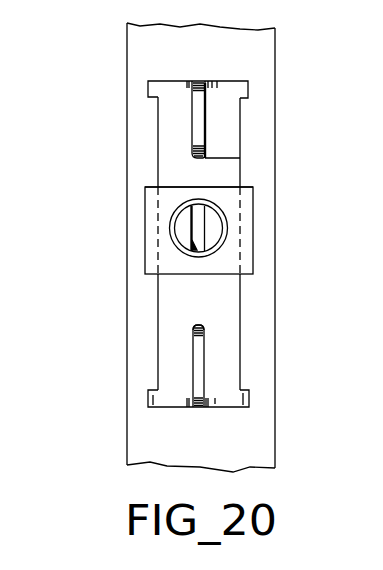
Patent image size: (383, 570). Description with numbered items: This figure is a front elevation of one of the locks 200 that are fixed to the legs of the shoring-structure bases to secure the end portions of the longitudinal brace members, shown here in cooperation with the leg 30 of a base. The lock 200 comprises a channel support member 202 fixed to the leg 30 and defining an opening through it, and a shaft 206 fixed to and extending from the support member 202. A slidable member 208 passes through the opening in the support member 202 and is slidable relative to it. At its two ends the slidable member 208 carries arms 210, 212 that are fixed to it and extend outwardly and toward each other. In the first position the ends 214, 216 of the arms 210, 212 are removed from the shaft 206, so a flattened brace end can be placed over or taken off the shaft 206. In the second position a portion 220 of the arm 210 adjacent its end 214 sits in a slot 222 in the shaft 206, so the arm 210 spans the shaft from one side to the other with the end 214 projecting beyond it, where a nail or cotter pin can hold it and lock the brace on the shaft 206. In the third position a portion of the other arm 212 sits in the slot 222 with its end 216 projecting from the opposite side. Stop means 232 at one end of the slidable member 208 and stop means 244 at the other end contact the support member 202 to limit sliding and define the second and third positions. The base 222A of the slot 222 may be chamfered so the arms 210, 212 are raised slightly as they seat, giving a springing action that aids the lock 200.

The leg 30 is at (212, 65).
The lock 200 is at (282, 143).
The stop means 232 is at (163, 87).
The arm 210 is at (212, 102).
The portion of the arm 220 is at (191, 138).
The end of arm 214 is at (240, 158).
The channel support member 202 is at (254, 215).
The slidable member 208 is at (210, 185).
The shaft 206 is at (253, 257).
The slot 222 is at (196, 251).
The base of the slot 222A is at (204, 240).
The arm 212 is at (210, 372).
The end of arm 216 is at (203, 326).
The stop means 244 is at (240, 403).